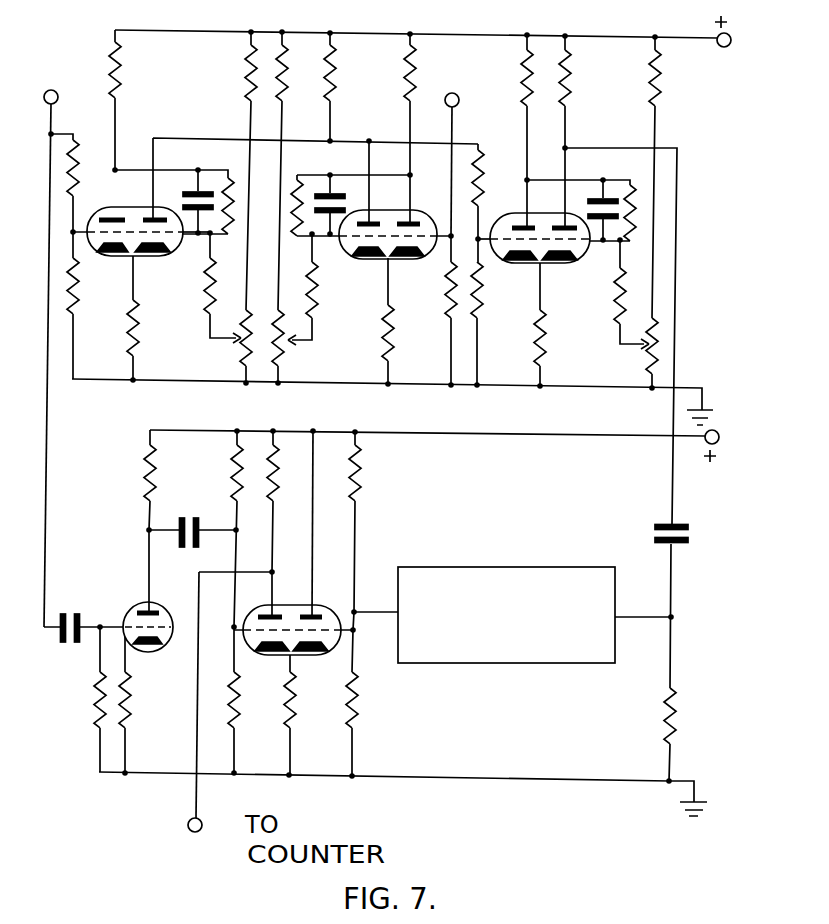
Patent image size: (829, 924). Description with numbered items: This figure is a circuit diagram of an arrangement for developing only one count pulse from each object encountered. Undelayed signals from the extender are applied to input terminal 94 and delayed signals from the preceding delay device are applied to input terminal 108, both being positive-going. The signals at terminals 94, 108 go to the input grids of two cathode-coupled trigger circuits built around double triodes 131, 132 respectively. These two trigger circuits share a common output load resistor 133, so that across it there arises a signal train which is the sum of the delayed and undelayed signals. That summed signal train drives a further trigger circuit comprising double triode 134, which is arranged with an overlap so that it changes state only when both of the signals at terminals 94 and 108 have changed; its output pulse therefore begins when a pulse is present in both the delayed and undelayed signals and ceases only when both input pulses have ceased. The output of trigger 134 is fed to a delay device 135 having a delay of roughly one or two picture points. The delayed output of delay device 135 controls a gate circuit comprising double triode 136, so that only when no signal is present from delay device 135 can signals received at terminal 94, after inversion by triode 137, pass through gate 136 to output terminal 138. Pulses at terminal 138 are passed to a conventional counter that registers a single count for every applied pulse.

The input terminal 94 is at (55, 344).
The input terminal 108 is at (459, 150).
The double triode 131 is at (135, 218).
The double triode 132 is at (388, 221).
The output load resistor 133 is at (336, 90).
The double triode 134 is at (540, 225).
The delay device 135 is at (553, 575).
The double triode 136 is at (292, 616).
The triode 137 is at (132, 617).
The output terminal 138 is at (202, 718).